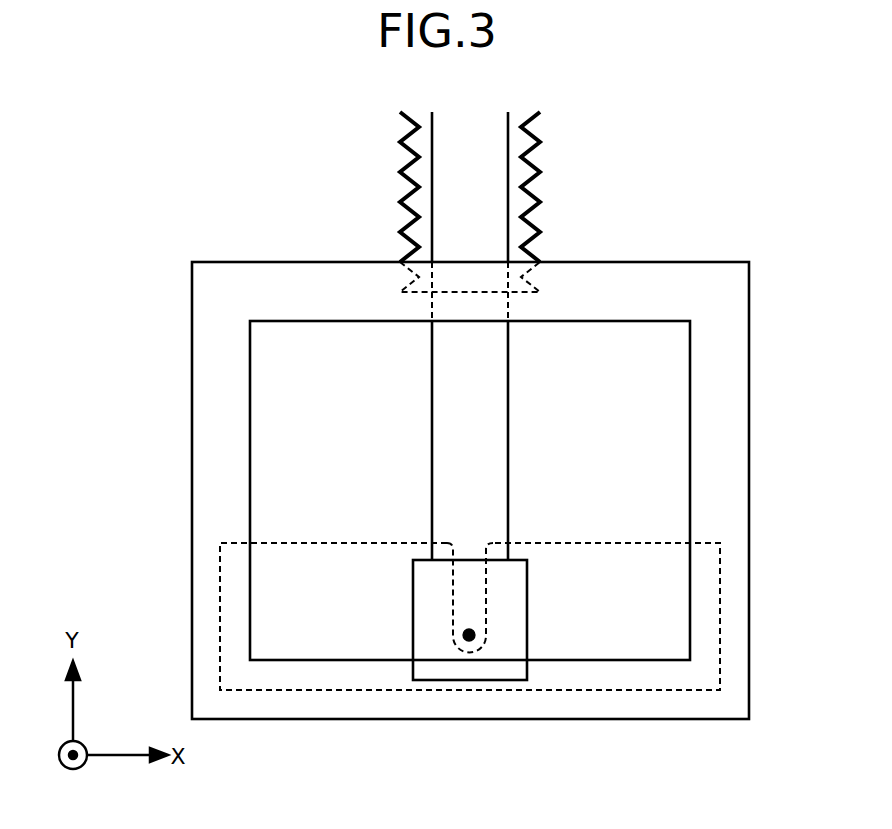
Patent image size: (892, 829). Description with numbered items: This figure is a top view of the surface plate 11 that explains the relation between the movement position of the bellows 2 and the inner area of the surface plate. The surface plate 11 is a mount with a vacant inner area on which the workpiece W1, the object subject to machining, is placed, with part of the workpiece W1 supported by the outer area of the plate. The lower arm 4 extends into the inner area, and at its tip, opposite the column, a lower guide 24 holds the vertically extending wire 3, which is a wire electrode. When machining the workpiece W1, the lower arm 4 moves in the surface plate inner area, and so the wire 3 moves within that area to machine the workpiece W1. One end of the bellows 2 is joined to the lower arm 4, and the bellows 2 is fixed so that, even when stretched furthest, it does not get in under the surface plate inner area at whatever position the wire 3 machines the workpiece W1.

The bellows 2 is at (536, 190).
The wire 3 is at (469, 641).
The lower arm 4 is at (500, 415).
The surface plate 11 is at (740, 470).
The lower guide 24 is at (423, 560).
The workpiece W1 is at (614, 543).